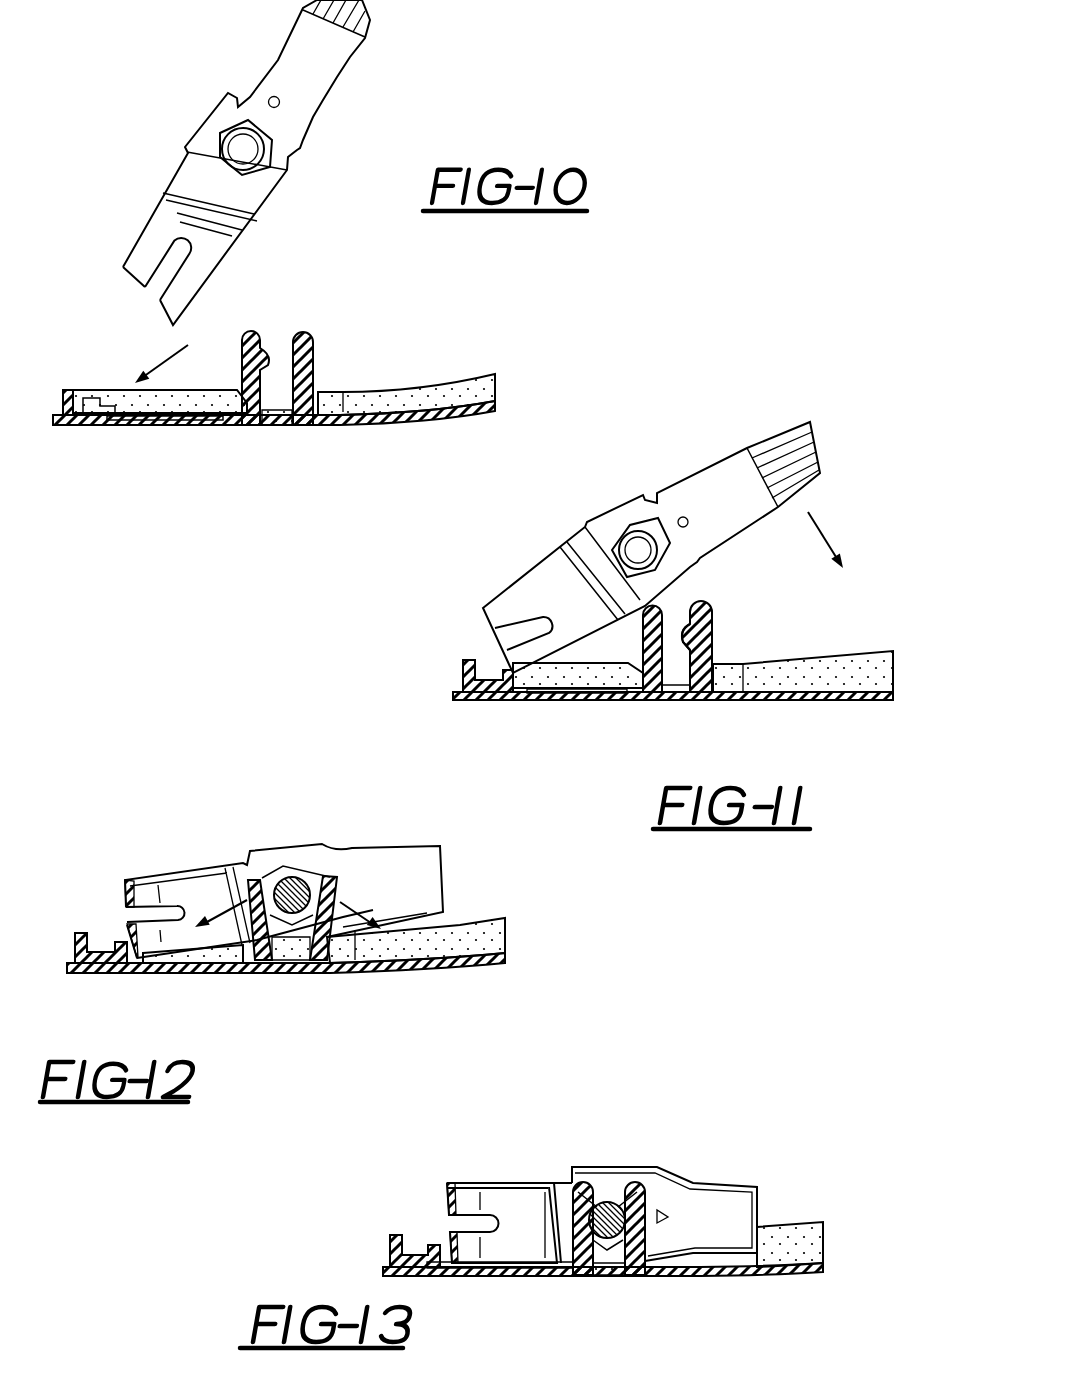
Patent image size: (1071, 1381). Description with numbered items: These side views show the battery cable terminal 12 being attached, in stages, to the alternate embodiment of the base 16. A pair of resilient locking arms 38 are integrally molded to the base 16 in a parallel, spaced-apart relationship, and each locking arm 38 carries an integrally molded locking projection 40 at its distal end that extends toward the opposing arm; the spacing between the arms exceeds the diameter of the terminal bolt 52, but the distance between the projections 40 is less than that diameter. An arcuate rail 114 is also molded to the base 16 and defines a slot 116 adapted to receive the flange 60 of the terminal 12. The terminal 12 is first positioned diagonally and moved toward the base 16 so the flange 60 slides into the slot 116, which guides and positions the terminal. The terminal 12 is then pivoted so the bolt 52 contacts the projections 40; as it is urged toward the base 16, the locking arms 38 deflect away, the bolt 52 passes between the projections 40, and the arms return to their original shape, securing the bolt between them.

In FIG. 10, the terminal 12 is at (170, 146).
In FIG. 11, the terminal 12 is at (578, 538).
In FIG. 12, the terminal 12 is at (215, 840).
In FIG. 13, the terminal 12 is at (548, 1165).
In FIG. 10, the base 16 is at (408, 405).
In FIG. 11, the base 16 is at (800, 690).
In FIG. 12, the base 16 is at (463, 935).
In FIG. 13, the base 16 is at (794, 1244).
In FIG. 10, the resilient locking arms 38 is at (293, 405).
In FIG. 11, the resilient locking arms 38 is at (688, 690).
In FIG. 12, the resilient locking arms 38 is at (303, 965).
In FIG. 13, the resilient locking arms 38 is at (620, 1275).
In FIG. 11, the locking projection 40 is at (683, 628).
In FIG. 10, the terminal bolt 52 is at (248, 156).
In FIG. 11, the terminal bolt 52 is at (636, 548).
In FIG. 12, the terminal bolt 52 is at (292, 878).
In FIG. 13, the terminal bolt 52 is at (612, 1210).
In FIG. 10, the flange 60 is at (173, 320).
In FIG. 10, the arcuate rail 114 is at (103, 392).
In FIG. 11, the arcuate rail 114 is at (488, 660).
In FIG. 12, the arcuate rail 114 is at (103, 935).
In FIG. 13, the arcuate rail 114 is at (434, 1234).
In FIG. 10, the slot 116 is at (122, 402).